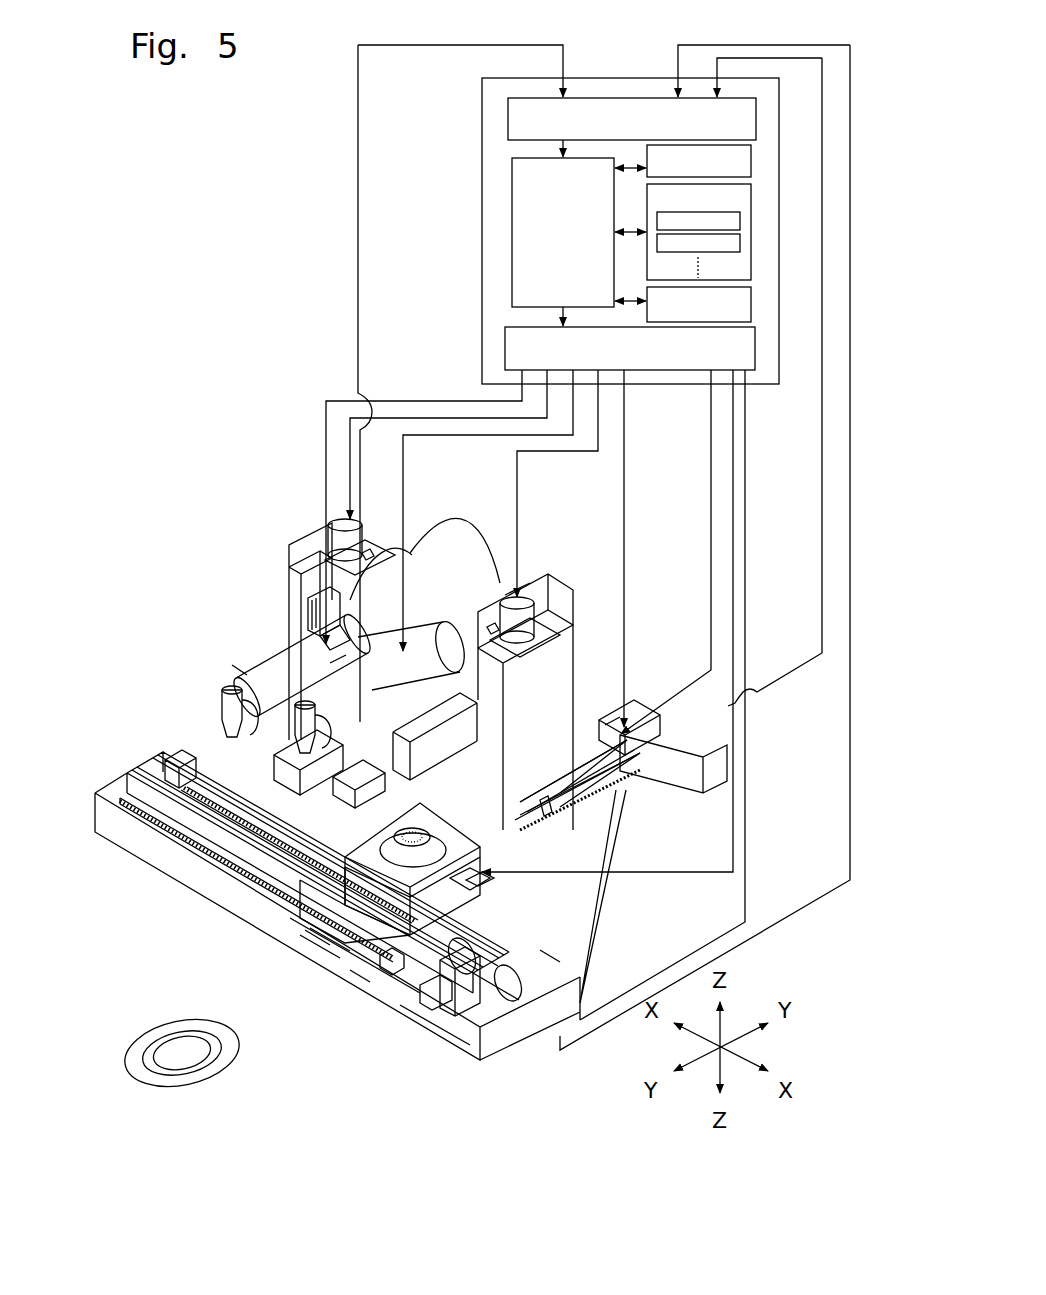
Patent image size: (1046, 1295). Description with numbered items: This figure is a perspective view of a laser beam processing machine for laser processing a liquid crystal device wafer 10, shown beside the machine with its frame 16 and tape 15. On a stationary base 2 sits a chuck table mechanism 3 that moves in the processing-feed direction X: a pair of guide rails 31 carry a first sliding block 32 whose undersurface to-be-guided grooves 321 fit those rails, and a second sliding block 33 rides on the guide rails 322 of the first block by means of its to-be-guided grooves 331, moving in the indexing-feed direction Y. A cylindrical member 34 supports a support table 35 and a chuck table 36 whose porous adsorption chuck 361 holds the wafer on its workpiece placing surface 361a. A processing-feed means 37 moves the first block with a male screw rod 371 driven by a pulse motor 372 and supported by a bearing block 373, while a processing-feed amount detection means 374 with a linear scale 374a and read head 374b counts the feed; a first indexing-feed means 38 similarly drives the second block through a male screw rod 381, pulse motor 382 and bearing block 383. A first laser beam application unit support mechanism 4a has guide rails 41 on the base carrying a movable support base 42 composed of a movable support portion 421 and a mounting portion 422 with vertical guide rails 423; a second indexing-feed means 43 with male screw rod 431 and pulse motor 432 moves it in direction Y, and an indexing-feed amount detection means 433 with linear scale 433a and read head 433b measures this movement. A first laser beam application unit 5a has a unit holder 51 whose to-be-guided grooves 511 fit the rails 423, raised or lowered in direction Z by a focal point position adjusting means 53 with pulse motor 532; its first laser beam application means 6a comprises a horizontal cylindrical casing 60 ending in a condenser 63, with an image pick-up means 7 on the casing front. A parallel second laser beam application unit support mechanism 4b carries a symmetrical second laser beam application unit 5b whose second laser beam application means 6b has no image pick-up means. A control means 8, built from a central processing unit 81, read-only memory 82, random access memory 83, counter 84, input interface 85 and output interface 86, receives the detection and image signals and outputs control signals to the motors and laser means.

The stationary base 2 is at (640, 912).
The chuck table mechanism 3 is at (583, 939).
The first laser beam application unit support mechanism 4a is at (682, 775).
The second laser beam application unit support mechanism 4b is at (213, 843).
The first laser beam application unit 5a is at (330, 663).
The second laser beam application unit 5b is at (232, 664).
The first laser beam application means 6a is at (320, 600).
The second laser beam application means 6b is at (307, 630).
The image pick-up means 7 is at (274, 784).
The control means 8 is at (604, 74).
The liquid crystal device wafer 10 is at (170, 1071).
The protective tape 15 is at (200, 1085).
The annular frame 16 is at (155, 1072).
The guide rails 31 is at (172, 756).
The first sliding block 32 is at (345, 943).
The second sliding block 33 is at (470, 920).
The cylindrical member 34 is at (440, 1025).
The support table 35 is at (488, 855).
The chuck table 36 is at (380, 843).
The processing-feed means 37 is at (455, 1040).
The first indexing-feed means 38 is at (490, 895).
The guide rails 41 is at (345, 795).
The movable support base 42 is at (288, 560).
The second indexing-feed means 43 is at (642, 727).
The unit holder 51 is at (500, 580).
The focal point position adjusting means 53 is at (338, 514).
The cylindrical casing 60 is at (270, 668).
The condenser 63 is at (222, 705).
The central processing unit 81 is at (512, 195).
The read-only memory 82 is at (751, 172).
The random access memory 83 is at (751, 228).
The counter 84 is at (751, 292).
The input interface 85 is at (508, 118).
The output interface 86 is at (505, 352).
The to-be-guided grooves 321 is at (410, 1020).
The guide rails 322 is at (335, 955).
The to-be-guided grooves 331 is at (300, 920).
The adsorption chuck 361 is at (532, 820).
The workpiece placing surface 361a is at (500, 845).
The male screw rod 371 is at (178, 792).
The pulse motor 372 is at (512, 985).
The bearing block 373 is at (165, 760).
The processing-feed amount detection means 374 is at (440, 1040).
The linear scale 374a is at (125, 802).
The read head 374b is at (392, 975).
The male screw rod 381 is at (310, 935).
The pulse motor 382 is at (482, 880).
The bearing block 383 is at (355, 975).
The movable support portion 421 is at (455, 688).
The mounting portion 422 is at (289, 580).
The guide rails 423 is at (330, 560).
The male screw rod 431 is at (425, 775).
The pulse motor 432 is at (619, 722).
The indexing-feed amount detection means 433 is at (615, 860).
The linear scale 433a is at (615, 840).
The read head 433b is at (545, 800).
The to-be-guided grooves 511 is at (410, 553).
The pulse motor 532 is at (522, 600).